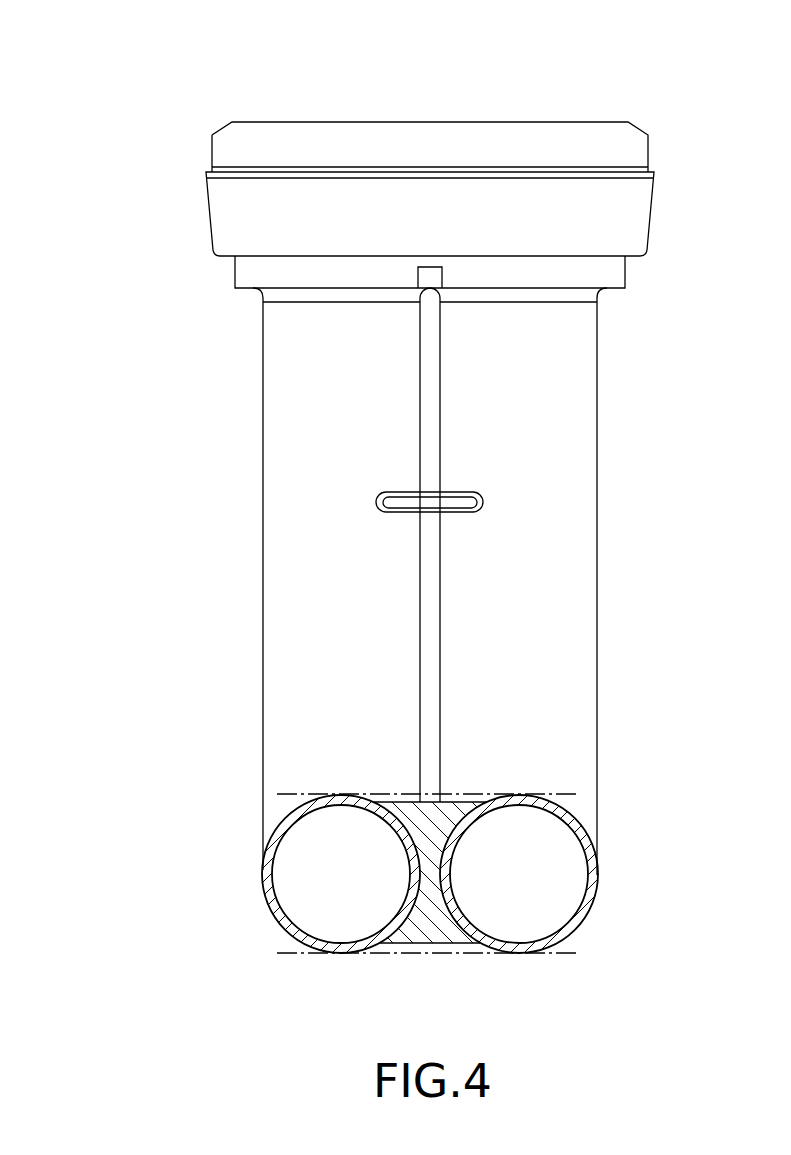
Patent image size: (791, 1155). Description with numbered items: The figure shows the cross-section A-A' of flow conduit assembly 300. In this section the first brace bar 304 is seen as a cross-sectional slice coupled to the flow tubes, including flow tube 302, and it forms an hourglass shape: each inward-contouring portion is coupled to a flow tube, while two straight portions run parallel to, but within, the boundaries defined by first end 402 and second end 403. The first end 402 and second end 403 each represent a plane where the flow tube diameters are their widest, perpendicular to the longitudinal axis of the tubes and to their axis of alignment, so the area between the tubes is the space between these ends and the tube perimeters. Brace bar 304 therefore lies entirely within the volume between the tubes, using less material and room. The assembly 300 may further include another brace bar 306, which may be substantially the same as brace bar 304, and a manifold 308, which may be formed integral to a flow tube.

The flow conduit assembly 300 is at (137, 88).
The manifold 308 is at (208, 215).
The brace bar 306 is at (427, 498).
The first end 402 is at (472, 793).
The first brace bar 304 is at (433, 838).
The first flow tube 302 is at (593, 883).
The second end 403 is at (408, 953).